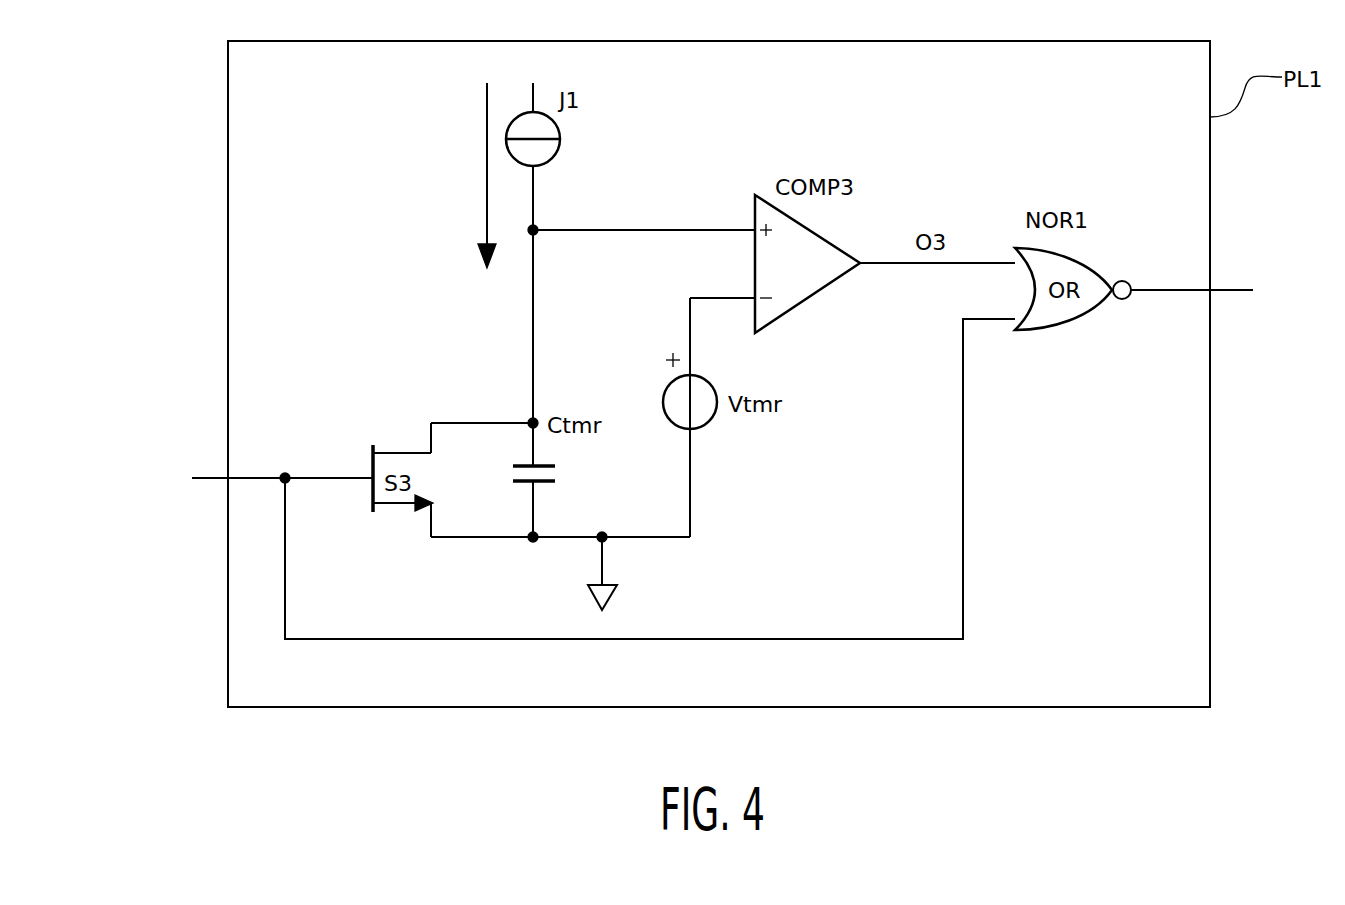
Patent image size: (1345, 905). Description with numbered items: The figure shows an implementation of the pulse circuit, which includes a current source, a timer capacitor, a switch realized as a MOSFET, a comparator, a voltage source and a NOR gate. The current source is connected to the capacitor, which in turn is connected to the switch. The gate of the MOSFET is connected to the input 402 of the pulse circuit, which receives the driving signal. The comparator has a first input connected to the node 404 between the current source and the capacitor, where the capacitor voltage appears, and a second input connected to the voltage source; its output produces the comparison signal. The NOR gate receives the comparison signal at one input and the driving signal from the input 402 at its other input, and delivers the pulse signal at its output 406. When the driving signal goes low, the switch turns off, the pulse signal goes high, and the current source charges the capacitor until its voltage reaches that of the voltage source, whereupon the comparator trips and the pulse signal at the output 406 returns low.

The input 402 is at (208, 476).
The node 404 is at (538, 226).
The output 406 is at (1165, 292).